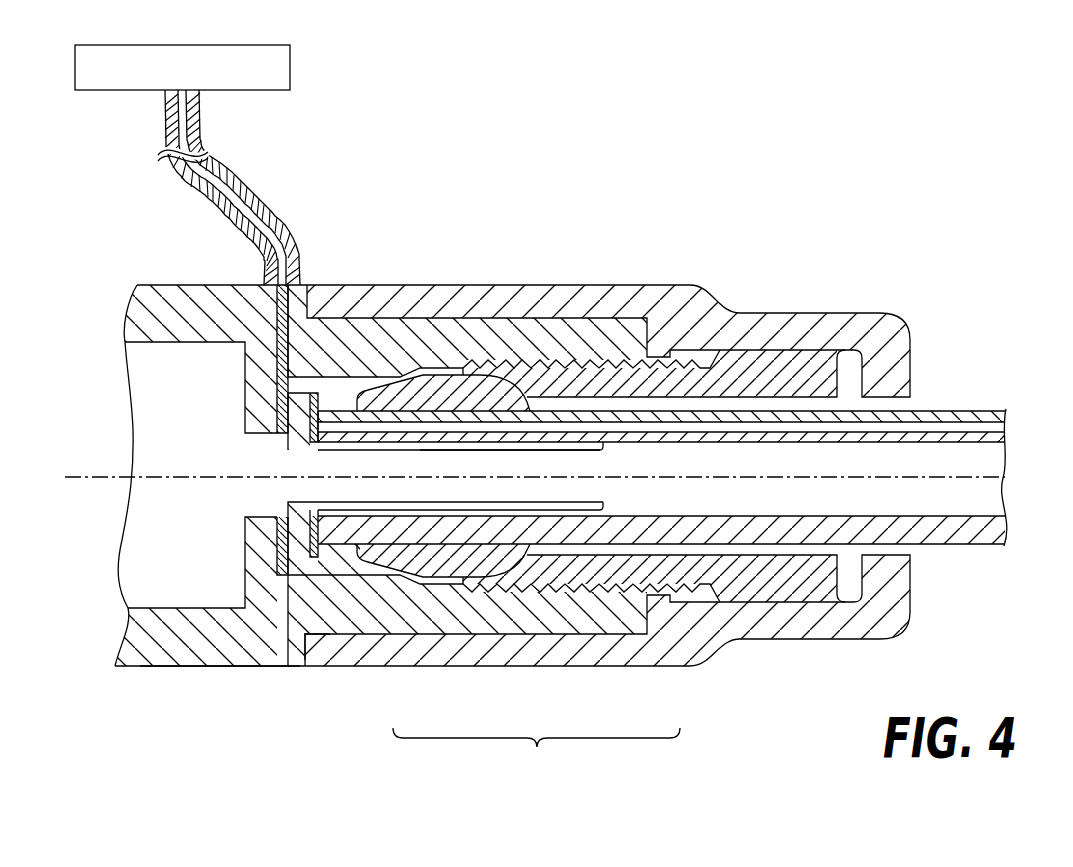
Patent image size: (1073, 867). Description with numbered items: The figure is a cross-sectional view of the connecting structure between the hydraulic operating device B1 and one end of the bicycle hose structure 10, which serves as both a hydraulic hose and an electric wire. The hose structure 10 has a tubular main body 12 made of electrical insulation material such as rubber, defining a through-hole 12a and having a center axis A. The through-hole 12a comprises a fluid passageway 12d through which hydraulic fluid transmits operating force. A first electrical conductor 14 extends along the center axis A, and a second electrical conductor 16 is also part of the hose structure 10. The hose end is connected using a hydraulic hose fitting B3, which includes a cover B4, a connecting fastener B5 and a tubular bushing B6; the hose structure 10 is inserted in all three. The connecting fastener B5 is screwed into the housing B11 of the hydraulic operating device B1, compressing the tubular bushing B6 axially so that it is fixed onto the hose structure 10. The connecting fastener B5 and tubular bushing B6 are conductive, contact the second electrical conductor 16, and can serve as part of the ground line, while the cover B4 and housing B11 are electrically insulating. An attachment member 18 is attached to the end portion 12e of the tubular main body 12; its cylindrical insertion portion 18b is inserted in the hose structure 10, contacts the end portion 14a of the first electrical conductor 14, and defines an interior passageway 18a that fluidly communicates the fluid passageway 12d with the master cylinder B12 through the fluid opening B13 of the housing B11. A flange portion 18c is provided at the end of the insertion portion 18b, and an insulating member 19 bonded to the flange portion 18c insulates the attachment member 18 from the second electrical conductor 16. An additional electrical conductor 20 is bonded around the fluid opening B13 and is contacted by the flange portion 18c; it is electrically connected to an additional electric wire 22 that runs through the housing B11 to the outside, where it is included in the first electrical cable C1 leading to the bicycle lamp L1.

The bicycle lamp L1 is at (301, 82).
The first electrical cable C1 is at (174, 180).
The additional electric wire 22 is at (247, 292).
The flange portion 18c is at (298, 393).
The insulating member 19 is at (352, 388).
The interior passageway 18a is at (418, 458).
The insertion portion 18b is at (532, 447).
The attachment member 18 is at (619, 451).
The fluid passageway 12d is at (752, 455).
The bicycle hose structure 10 is at (977, 390).
The second electrical conductor 16 is at (990, 411).
The tubular main body 12 is at (1002, 428).
The first electrical conductor 14 is at (1002, 436).
The through-hole 12a is at (997, 497).
The additional electrical conductor 20 is at (245, 410).
The end portion 14a is at (303, 447).
The center axis A is at (117, 476).
The master cylinder B12 is at (130, 603).
The hydraulic operating device B1 is at (150, 677).
The housing B11 is at (207, 647).
The fluid opening B13 is at (245, 600).
The end portion 12e is at (323, 635).
The tubular bushing B6 is at (430, 645).
The cover B4 is at (525, 650).
The connecting fastener B5 is at (703, 585).
The hydraulic hose fitting B3 is at (536, 753).